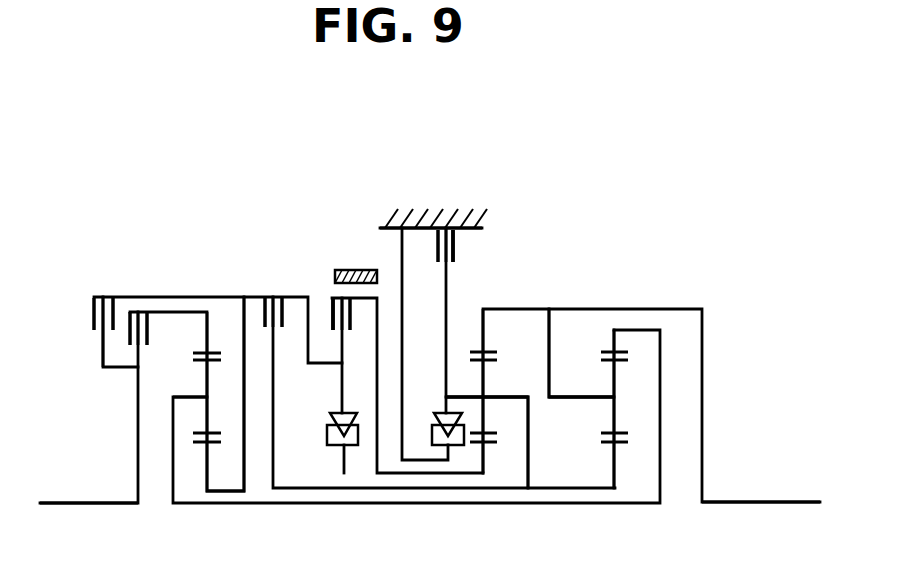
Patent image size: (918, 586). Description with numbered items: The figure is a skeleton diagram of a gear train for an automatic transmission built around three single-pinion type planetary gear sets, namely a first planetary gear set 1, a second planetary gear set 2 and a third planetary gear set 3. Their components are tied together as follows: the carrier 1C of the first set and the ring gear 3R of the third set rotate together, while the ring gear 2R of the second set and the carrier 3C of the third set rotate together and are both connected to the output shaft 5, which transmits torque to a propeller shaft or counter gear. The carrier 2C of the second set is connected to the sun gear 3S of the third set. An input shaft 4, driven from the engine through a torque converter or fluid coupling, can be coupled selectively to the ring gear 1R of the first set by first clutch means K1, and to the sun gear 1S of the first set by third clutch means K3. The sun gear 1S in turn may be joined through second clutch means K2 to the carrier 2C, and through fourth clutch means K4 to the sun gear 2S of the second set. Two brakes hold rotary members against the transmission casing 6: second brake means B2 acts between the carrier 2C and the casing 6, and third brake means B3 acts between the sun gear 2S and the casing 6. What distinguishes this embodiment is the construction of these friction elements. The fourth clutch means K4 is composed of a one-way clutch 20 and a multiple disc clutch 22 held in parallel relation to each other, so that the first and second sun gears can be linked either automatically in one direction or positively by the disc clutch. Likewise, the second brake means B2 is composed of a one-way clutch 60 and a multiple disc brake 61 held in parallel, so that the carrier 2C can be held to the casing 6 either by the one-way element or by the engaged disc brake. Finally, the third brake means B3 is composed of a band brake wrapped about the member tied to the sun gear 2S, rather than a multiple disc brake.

The first planetary gear set 1 is at (208, 429).
The ring gear of the first planetary gear set 1R is at (211, 352).
The carrier of the first planetary gear set 1C is at (200, 396).
The sun gear of the first planetary gear set 1S is at (212, 445).
The second planetary gear set 2 is at (487, 433).
The ring gear of the second planetary gear set 2R is at (487, 352).
The carrier of the second planetary gear set 2C is at (487, 397).
The sun gear of the second planetary gear set 2S is at (493, 454).
The third planetary gear set 3 is at (598, 437).
The ring gear of the third planetary gear set 3R is at (612, 348).
The carrier of the third planetary gear set 3C is at (612, 396).
The sun gear of the third planetary gear set 3S is at (622, 445).
The input shaft 4 is at (107, 502).
The output shaft 5 is at (768, 501).
The transmission casing 6 is at (442, 220).
The one-way clutch 20 is at (327, 430).
The multiple disc clutch 22 is at (333, 312).
The one-way clutch 60 is at (433, 433).
The multiple disc brake 61 is at (455, 247).
The first clutch means K1 is at (155, 328).
The second clutch means K2 is at (275, 299).
The third clutch means K3 is at (105, 319).
The fourth clutch means K4 is at (349, 409).
The second brake means B2 is at (441, 399).
The third brake means B3 is at (356, 264).